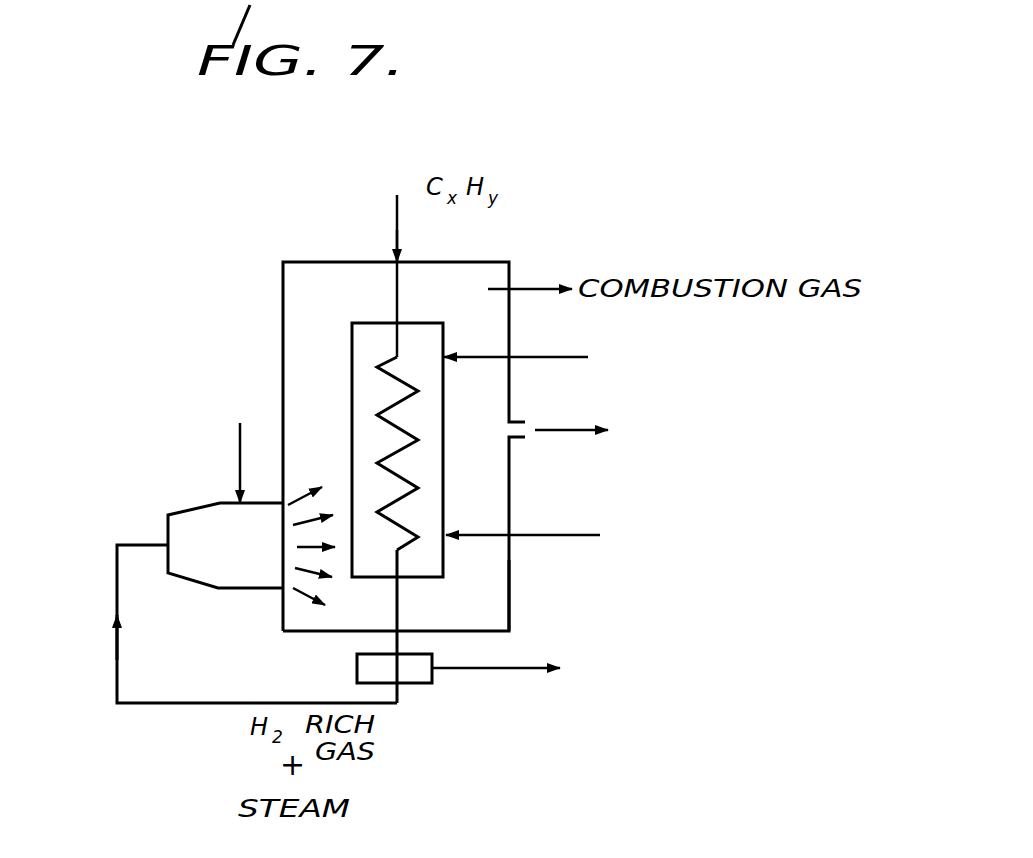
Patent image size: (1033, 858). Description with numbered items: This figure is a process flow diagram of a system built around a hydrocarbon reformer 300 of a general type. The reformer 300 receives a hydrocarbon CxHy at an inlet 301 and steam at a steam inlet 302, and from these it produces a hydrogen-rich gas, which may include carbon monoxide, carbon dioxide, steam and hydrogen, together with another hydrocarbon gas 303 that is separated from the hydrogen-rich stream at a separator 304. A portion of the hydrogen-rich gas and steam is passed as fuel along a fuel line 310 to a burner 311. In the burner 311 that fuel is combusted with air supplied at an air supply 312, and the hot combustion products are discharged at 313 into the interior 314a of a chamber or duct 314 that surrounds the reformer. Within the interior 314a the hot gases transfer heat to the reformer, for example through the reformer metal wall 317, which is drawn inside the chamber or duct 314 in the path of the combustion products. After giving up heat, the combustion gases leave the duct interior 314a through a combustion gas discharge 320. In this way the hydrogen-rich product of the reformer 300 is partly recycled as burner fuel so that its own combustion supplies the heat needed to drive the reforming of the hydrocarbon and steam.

The hydrocarbon reformer 300 is at (553, 542).
The hydrocarbon inlet 301 is at (395, 252).
The steam inlet 302 is at (484, 358).
The other hydrocarbon gas 303 is at (520, 668).
The separator 304 is at (412, 675).
The fuel line 310 is at (125, 705).
The burner 311 is at (190, 530).
The air supply 312 is at (240, 453).
The combustion products discharge 313 is at (297, 588).
The chamber or duct 314 is at (283, 298).
The interior of chamber or duct 314a is at (490, 586).
The reformer metal wall 317 is at (443, 492).
The combustion gas discharge 320 is at (568, 432).